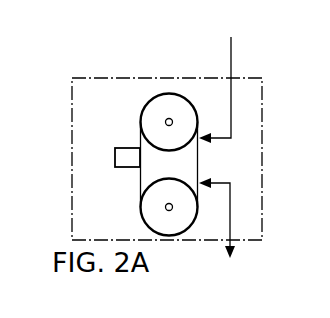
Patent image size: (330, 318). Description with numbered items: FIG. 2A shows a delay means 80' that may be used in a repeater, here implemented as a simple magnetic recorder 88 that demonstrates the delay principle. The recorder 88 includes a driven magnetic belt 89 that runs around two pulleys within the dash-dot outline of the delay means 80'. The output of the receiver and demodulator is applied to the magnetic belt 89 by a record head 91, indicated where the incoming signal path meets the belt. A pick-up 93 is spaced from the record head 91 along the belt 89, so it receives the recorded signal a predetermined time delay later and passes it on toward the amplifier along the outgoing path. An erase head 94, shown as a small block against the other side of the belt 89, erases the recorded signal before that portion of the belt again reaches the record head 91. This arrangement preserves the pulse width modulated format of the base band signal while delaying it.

The delay means 80' is at (165, 136).
The recorder 88 is at (138, 128).
The magnetic belt 89 is at (199, 162).
The record head 91 is at (208, 136).
The pick-up 93 is at (218, 184).
The erase head 94 is at (114, 157).